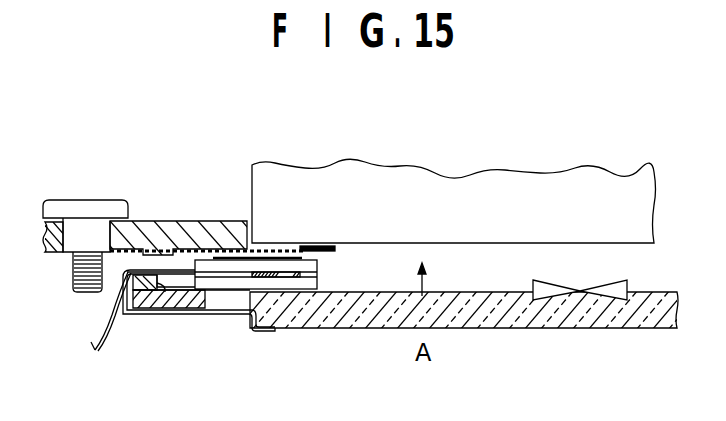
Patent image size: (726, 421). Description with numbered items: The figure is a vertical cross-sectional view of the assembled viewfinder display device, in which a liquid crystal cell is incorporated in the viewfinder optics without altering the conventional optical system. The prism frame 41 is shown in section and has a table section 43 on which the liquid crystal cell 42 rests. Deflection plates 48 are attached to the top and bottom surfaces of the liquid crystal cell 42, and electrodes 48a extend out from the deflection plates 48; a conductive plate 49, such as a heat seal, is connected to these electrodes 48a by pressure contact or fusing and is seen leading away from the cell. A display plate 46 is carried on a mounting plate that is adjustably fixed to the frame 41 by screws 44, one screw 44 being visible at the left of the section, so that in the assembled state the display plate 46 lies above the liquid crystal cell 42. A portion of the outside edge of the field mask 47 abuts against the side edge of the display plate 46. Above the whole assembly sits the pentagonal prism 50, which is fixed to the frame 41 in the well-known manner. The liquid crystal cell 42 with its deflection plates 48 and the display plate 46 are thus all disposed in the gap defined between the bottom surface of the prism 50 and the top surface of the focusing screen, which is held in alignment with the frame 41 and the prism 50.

The prism frame 41 is at (152, 229).
The liquid crystal cell 42 is at (205, 258).
The table section 43 is at (157, 283).
The screw 44 is at (73, 279).
The display plate 46 is at (283, 249).
The field mask 47 is at (333, 250).
The deflection plate 48 is at (227, 250).
The electrode 48a is at (178, 278).
The conductive plate 49 is at (118, 327).
The pentagonal prism 50 is at (455, 184).